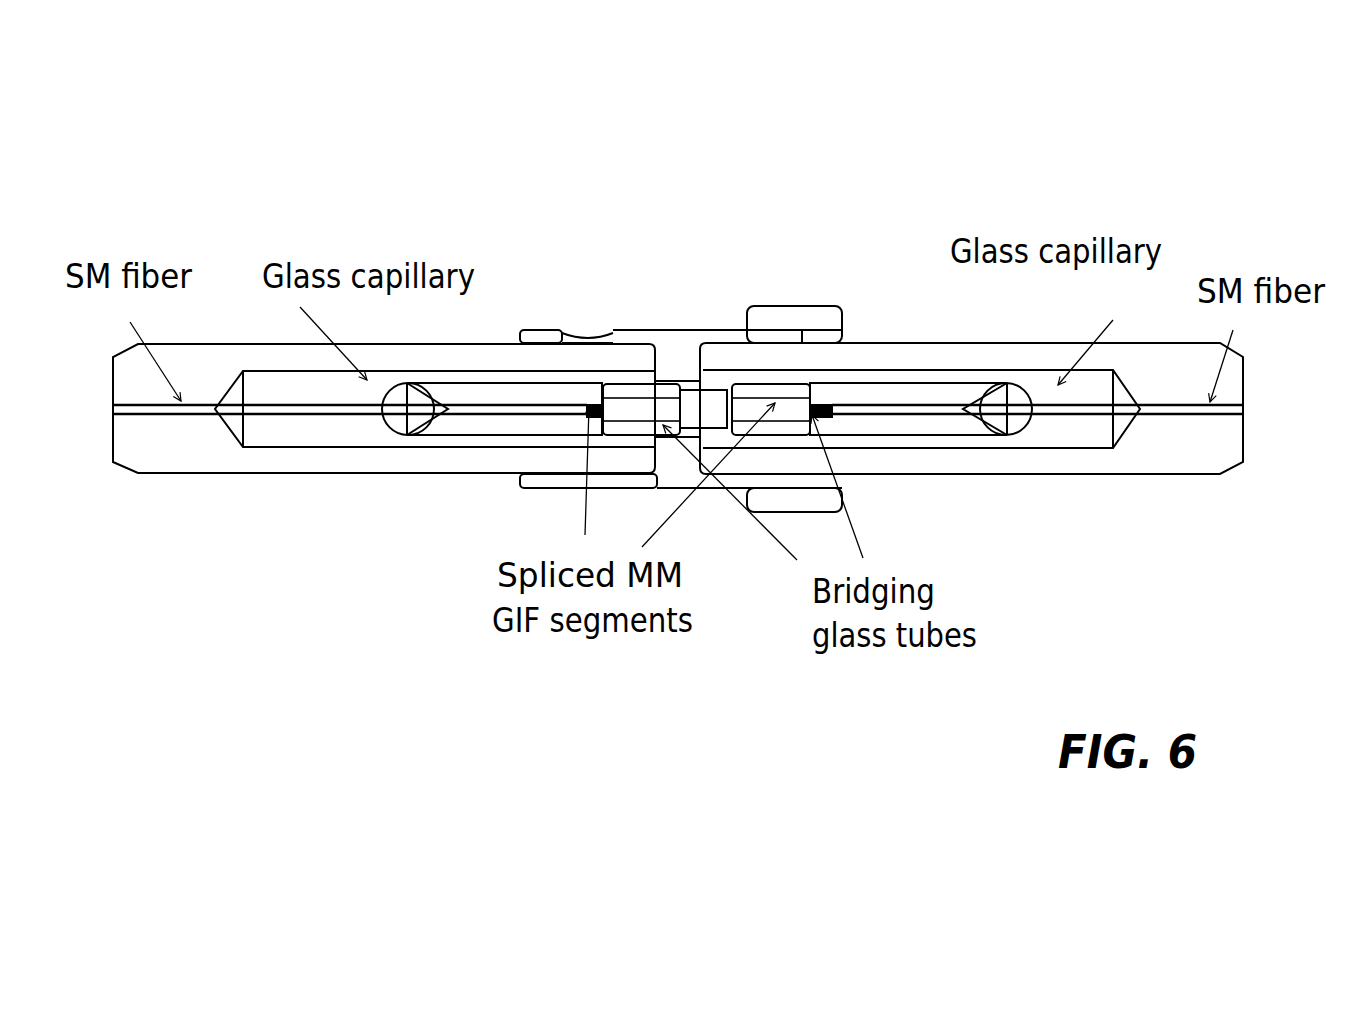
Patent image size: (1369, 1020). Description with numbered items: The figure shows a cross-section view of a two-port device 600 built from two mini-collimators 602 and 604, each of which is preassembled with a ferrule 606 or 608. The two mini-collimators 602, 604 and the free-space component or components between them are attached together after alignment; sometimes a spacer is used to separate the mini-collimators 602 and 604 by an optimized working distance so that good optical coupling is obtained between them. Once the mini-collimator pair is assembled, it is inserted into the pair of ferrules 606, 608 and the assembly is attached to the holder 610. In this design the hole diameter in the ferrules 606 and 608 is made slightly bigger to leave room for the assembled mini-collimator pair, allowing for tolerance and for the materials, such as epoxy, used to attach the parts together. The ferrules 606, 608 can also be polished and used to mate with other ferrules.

The 2-port device 600 is at (678, 247).
The mini-collimator 602 is at (438, 435).
The mini-collimator 604 is at (928, 435).
The ferrule 606 is at (188, 448).
The ferrule 608 is at (1037, 460).
The holder 610 is at (694, 328).